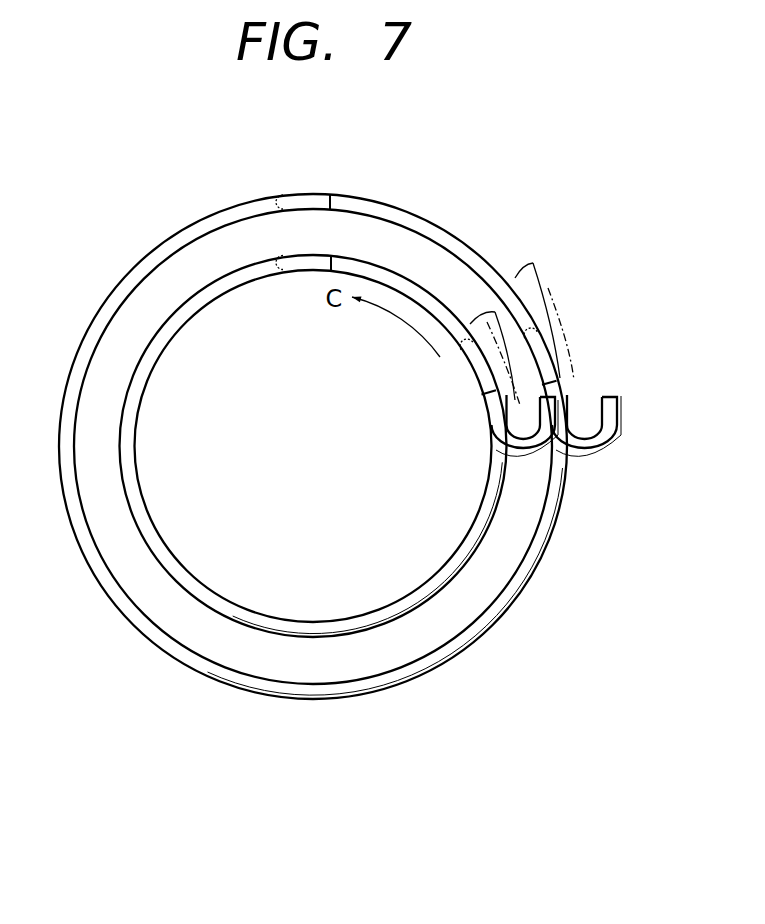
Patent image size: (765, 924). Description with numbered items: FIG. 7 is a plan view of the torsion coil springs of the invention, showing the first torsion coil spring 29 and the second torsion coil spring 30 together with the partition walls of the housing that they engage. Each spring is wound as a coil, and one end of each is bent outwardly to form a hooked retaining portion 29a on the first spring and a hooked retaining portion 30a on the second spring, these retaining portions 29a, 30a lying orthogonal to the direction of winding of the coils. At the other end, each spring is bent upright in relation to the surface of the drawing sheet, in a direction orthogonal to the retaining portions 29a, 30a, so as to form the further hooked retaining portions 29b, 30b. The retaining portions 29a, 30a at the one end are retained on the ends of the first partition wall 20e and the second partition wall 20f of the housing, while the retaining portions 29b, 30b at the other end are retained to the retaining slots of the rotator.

The first torsion coil spring 29 is at (250, 632).
The retaining portion 29a is at (543, 452).
The retaining portion 29b is at (318, 257).
The second torsion coil spring 30 is at (356, 700).
The retaining portion 30a is at (620, 433).
The retaining portion 30b is at (313, 196).
The first partition wall 20e is at (496, 404).
The second partition wall 20f is at (588, 382).